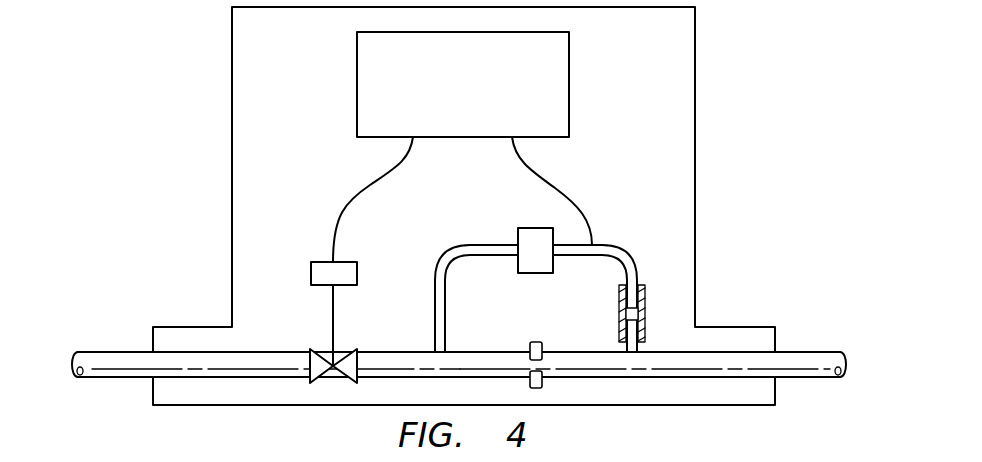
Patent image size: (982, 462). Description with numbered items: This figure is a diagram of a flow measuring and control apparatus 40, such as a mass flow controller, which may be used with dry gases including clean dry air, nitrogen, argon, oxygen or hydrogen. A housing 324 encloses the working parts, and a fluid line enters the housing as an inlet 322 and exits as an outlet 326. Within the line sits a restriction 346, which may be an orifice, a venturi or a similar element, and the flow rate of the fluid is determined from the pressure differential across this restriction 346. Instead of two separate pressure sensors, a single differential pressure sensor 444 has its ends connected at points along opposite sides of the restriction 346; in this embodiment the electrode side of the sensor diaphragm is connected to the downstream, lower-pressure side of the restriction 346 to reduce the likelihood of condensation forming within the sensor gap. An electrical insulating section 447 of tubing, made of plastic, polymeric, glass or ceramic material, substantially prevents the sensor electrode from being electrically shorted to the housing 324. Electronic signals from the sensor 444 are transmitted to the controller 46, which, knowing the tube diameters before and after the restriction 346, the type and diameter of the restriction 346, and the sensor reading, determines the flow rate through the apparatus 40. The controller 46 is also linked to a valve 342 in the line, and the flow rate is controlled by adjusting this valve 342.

The flow measuring and control apparatus 40 is at (737, 41).
The housing 324 is at (707, 123).
The controller 46 is at (463, 84).
The inlet pipe 322 is at (112, 350).
The outlet pipe 326 is at (805, 350).
The valve 342 is at (322, 300).
The differential pressure sensor 444 is at (515, 232).
The electrical insulating section 447 is at (648, 292).
The restriction 346 is at (528, 345).